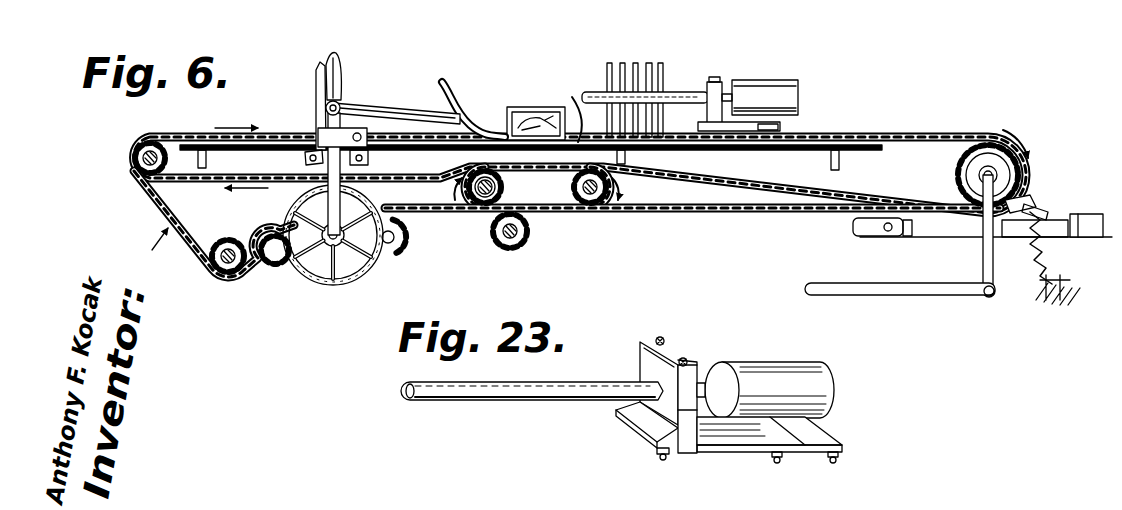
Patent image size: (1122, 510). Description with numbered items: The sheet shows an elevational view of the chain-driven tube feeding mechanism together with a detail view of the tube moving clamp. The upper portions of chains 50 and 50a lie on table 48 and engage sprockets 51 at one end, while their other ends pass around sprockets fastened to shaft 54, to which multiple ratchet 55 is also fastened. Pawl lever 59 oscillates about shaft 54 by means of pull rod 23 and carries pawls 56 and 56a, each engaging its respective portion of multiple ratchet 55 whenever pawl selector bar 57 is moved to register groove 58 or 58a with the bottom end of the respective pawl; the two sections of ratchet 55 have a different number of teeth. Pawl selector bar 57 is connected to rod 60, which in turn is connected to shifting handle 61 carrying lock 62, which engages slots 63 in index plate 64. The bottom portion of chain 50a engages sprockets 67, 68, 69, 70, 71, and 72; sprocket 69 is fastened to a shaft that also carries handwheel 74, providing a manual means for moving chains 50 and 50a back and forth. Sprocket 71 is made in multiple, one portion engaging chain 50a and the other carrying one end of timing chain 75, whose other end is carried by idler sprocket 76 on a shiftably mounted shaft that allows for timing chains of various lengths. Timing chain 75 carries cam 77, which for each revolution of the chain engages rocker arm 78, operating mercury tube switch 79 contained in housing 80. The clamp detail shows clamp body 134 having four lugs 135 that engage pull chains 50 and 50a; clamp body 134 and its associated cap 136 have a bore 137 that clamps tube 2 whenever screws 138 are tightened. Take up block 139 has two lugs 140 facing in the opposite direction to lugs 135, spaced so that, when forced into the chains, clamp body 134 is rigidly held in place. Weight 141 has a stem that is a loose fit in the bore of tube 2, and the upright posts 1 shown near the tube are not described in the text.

In FIG. 6, the posts 1 is at (650, 64).
In FIG. 6, the tube 2 is at (672, 94).
In FIG. 23, the tube 2 is at (486, 381).
In FIG. 6, the pull rod 23 is at (886, 286).
In FIG. 6, the table 48 is at (878, 138).
In FIG. 6, the chain 50 is at (206, 181).
In FIG. 6, the chain 50a is at (163, 214).
In FIG. 6, the sprockets 51 is at (148, 144).
In FIG. 6, the shaft 54 is at (985, 142).
In FIG. 6, the multiple ratchet 55 is at (1006, 172).
In FIG. 6, the pawl 56 is at (1030, 204).
In FIG. 6, the pawl 56a is at (1050, 214).
In FIG. 6, the pawl selector bar 57 is at (1090, 236).
In FIG. 6, the groove 58 is at (1056, 232).
In FIG. 6, the groove 58a is at (1016, 242).
In FIG. 6, the pawl lever 59 is at (982, 253).
In FIG. 6, the rod 60 is at (420, 112).
In FIG. 6, the shifting handle 61 is at (340, 72).
In FIG. 6, the lock 62 is at (316, 80).
In FIG. 6, the slots 63 is at (305, 158).
In FIG. 6, the index plate 64 is at (368, 160).
In FIG. 6, the sprocket 67 is at (227, 275).
In FIG. 6, the sprocket 68 is at (270, 268).
In FIG. 6, the sprocket 69 is at (345, 262).
In FIG. 6, the sprocket 70 is at (400, 238).
In FIG. 6, the sprocket 71 is at (476, 205).
In FIG. 6, the sprocket 72 is at (522, 243).
In FIG. 6, the handwheel 74 is at (372, 266).
In FIG. 6, the timing chain 75 is at (556, 173).
In FIG. 6, the idler sprocket 76 is at (592, 208).
In FIG. 6, the cam 77 is at (500, 180).
In FIG. 6, the rocker arm 78 is at (578, 140).
In FIG. 6, the mercury tube switch 79 is at (541, 118).
In FIG. 6, the housing 80 is at (507, 108).
In FIG. 6, the clamp body 134 is at (740, 132).
In FIG. 23, the clamp body 134 is at (750, 440).
In FIG. 6, the lugs 135 is at (770, 132).
In FIG. 23, the lugs 135 is at (660, 456).
In FIG. 6, the cap 136 is at (718, 82).
In FIG. 23, the cap 136 is at (648, 348).
In FIG. 23, the bore 137 is at (640, 414).
In FIG. 23, the screws 138 is at (665, 340).
In FIG. 23, the take up block 139 is at (812, 429).
In FIG. 23, the lugs 140 is at (836, 460).
In FIG. 6, the weight 141 is at (770, 82).
In FIG. 23, the weight 141 is at (765, 376).